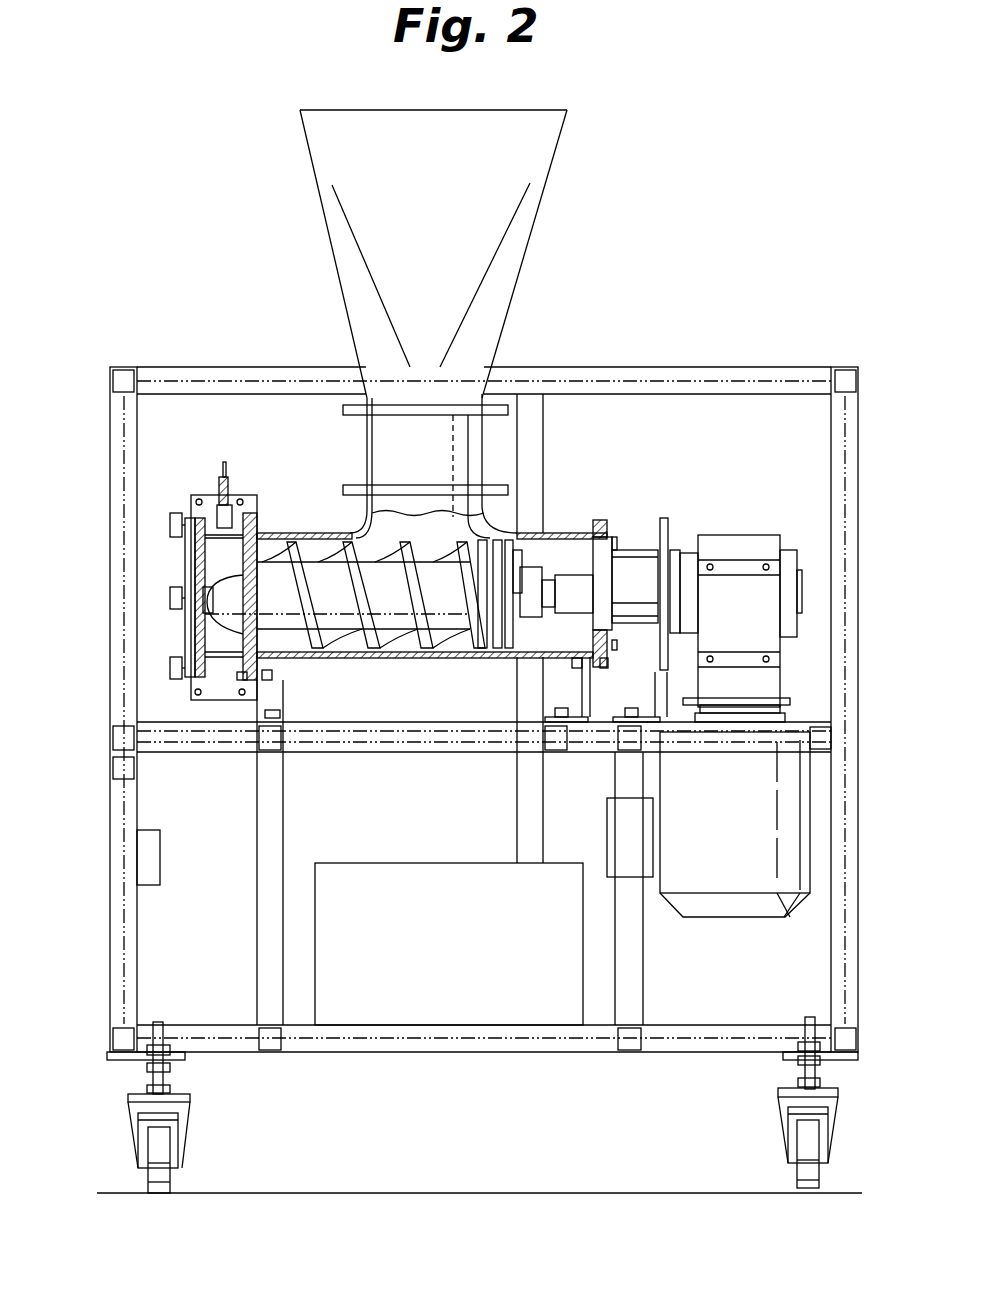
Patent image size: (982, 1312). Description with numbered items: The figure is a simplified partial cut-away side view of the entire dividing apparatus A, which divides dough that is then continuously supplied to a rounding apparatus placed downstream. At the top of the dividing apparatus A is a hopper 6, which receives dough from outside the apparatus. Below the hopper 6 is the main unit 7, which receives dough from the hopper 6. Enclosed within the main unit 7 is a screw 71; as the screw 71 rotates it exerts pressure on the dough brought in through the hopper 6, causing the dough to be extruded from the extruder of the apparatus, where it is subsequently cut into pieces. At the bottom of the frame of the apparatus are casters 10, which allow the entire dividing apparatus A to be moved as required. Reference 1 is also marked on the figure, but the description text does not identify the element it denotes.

The dividing apparatus A is at (690, 138).
The die / nozzle plate 1 is at (222, 622).
The hopper 6 is at (332, 150).
The main unit 7 is at (463, 527).
The screw 71 is at (409, 657).
The casters 10 is at (148, 1188).